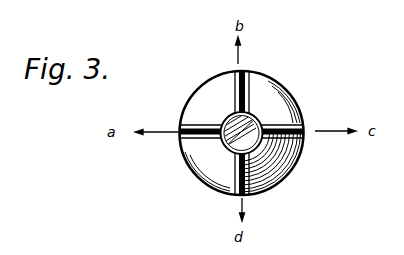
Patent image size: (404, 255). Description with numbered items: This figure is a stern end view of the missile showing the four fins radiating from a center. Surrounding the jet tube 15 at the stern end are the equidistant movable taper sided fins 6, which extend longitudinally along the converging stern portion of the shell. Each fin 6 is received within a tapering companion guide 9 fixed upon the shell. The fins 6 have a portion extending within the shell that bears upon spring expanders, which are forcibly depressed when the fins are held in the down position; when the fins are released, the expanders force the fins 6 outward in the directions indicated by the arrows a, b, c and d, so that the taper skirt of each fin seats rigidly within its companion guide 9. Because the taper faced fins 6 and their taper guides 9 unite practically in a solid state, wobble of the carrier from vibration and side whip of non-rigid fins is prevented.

The movable taper sided fin 6 is at (230, 123).
The tapering companion guide 9 is at (236, 93).
The jet tube 15 is at (233, 150).